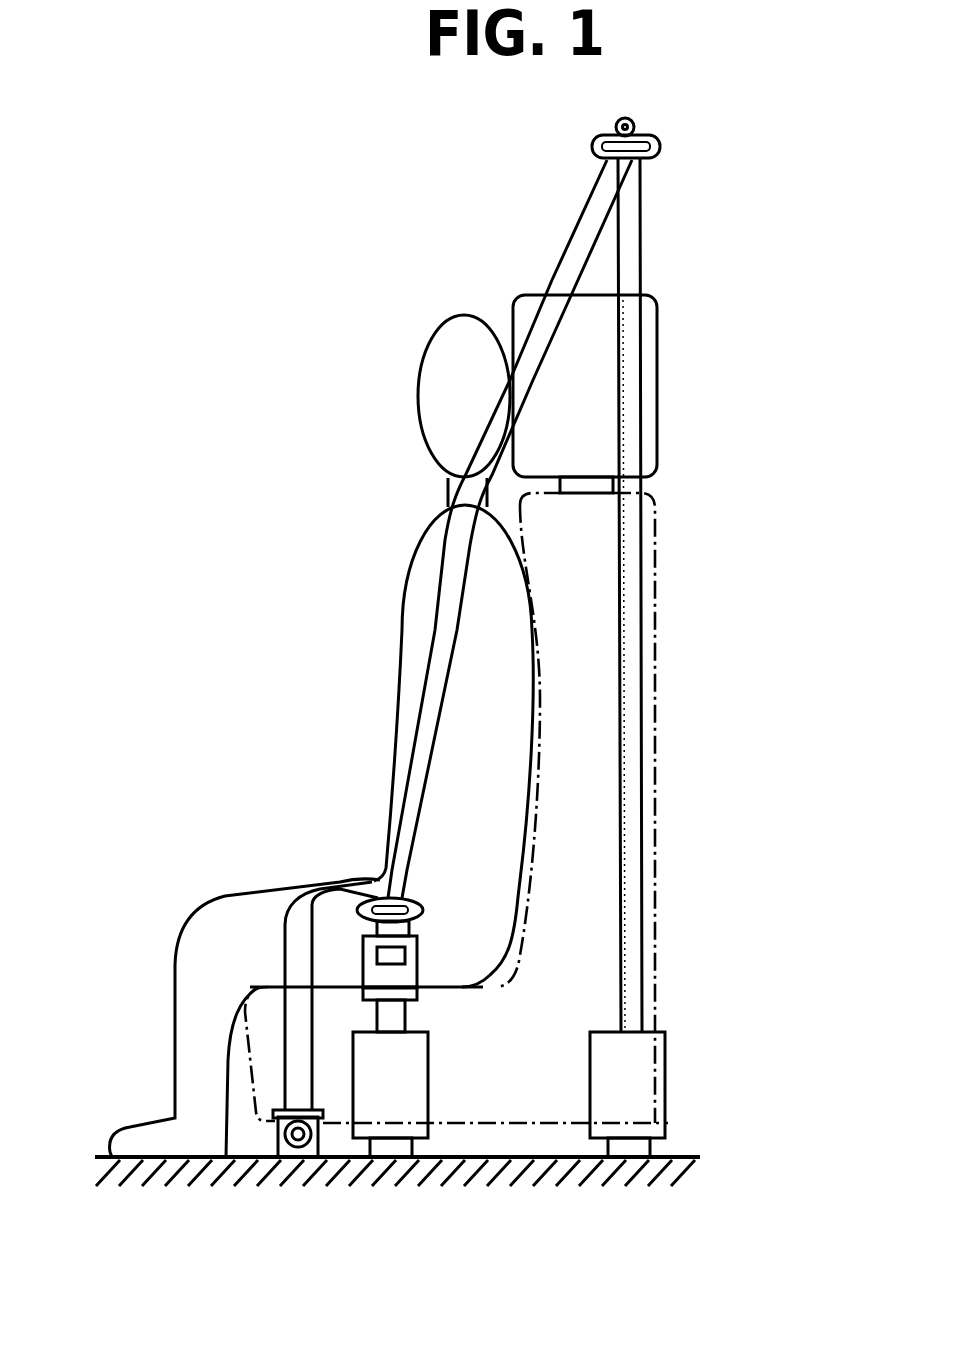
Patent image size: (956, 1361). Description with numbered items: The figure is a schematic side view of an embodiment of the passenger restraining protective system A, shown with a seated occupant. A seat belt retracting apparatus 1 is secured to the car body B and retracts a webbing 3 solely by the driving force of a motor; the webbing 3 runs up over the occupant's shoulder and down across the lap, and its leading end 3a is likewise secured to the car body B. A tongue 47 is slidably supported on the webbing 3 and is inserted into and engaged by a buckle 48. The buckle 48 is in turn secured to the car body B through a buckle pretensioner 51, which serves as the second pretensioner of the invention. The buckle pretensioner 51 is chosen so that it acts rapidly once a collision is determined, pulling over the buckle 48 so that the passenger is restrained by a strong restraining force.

The seat belt retracting apparatus 1 is at (640, 1088).
The webbing 3 is at (437, 668).
The leading end 3a is at (290, 1090).
The tongue 47 is at (423, 912).
The buckle 48 is at (395, 977).
The buckle pretensioner 51 is at (405, 1095).
The passenger restraining protective system A is at (352, 455).
The car body B is at (500, 1163).